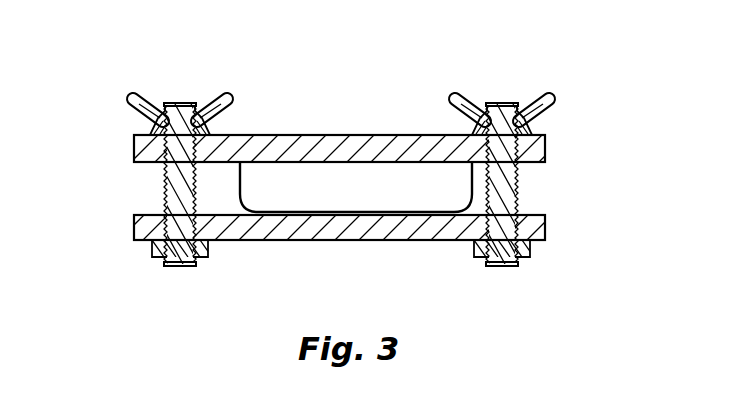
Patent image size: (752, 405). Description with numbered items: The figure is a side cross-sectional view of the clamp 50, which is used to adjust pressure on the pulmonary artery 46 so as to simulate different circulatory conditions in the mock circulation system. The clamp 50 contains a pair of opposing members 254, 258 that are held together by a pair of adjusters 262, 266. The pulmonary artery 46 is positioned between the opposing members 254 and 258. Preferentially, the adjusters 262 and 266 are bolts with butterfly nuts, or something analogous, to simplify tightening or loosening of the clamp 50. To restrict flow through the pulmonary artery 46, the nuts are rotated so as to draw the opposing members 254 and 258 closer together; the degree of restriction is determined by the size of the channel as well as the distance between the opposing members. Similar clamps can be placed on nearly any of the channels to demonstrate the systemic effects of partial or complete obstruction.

The clamp 50 is at (342, 156).
The opposing member 254 is at (134, 152).
The opposing member 258 is at (134, 232).
The pulmonary artery 46 is at (361, 199).
The adjuster 266 is at (175, 103).
The adjuster 262 is at (498, 103).